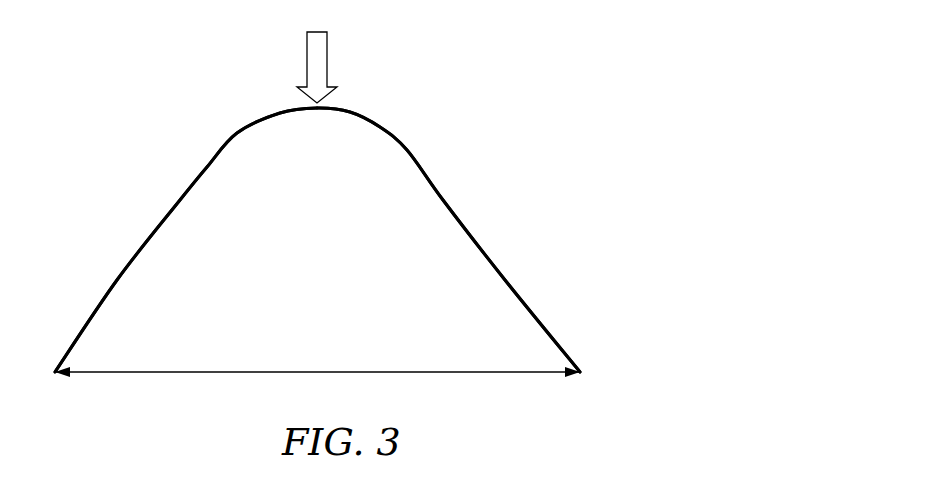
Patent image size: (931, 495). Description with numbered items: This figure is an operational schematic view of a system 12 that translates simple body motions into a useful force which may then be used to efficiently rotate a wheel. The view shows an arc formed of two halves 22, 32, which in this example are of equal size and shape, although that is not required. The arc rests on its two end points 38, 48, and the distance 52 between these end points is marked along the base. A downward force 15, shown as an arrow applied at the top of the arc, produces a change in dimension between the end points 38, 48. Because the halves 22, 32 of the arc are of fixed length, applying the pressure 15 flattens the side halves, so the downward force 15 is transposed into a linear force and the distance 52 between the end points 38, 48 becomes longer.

The arch structure 12 is at (503, 118).
The force 15 is at (327, 58).
The first half of the arc 22 is at (177, 195).
The second half of the arc 32 is at (452, 207).
The end point of the arc 38 is at (56, 375).
The end point of the arc 48 is at (583, 370).
The distance between the end points 52 is at (313, 372).